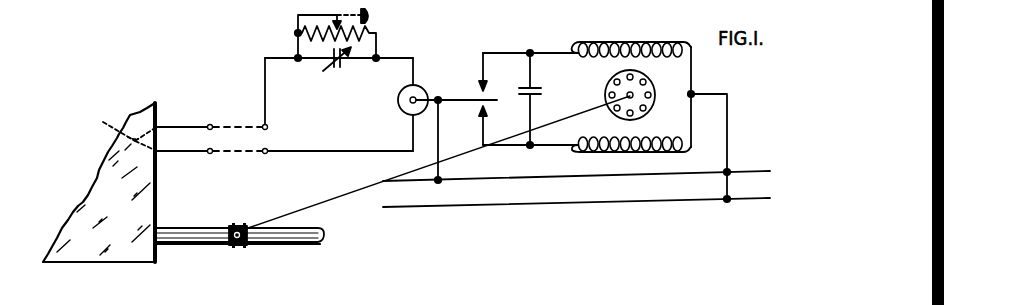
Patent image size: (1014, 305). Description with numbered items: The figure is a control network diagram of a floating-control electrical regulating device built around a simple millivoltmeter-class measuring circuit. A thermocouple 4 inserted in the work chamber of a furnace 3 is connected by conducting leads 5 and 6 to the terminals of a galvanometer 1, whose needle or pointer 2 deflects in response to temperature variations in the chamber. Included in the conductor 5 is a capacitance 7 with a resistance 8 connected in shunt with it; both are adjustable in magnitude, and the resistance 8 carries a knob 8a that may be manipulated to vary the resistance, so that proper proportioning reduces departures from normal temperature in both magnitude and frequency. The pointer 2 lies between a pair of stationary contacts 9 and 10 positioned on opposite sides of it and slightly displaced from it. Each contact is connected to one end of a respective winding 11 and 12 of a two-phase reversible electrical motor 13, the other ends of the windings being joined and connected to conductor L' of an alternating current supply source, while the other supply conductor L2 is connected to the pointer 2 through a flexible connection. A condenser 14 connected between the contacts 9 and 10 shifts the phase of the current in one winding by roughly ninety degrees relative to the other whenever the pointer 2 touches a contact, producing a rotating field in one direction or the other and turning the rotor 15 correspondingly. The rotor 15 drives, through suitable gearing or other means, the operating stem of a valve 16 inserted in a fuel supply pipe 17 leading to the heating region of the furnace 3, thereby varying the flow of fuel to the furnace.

The galvanometer 1 is at (422, 88).
The needle or pointer 2 is at (456, 100).
The furnace 3 is at (148, 213).
The thermocouple 4 is at (122, 131).
The conducting lead 5 is at (185, 127).
The conducting lead 6 is at (192, 154).
The capacitance 7 is at (336, 72).
The resistance 8 is at (312, 36).
The knob 8a is at (369, 15).
The stationary contact 9 is at (485, 91).
The stationary contact 10 is at (486, 108).
The winding 11 is at (628, 41).
The winding 12 is at (633, 152).
The two-phase reversible electrical motor 13 is at (602, 85).
The condenser 14 is at (545, 92).
The rotor 15 is at (655, 88).
The valve 16 is at (236, 224).
The fuel supply pipe 17 is at (290, 233).
The supply conductor L2 is at (491, 180).
The supply conductor L' is at (576, 213).